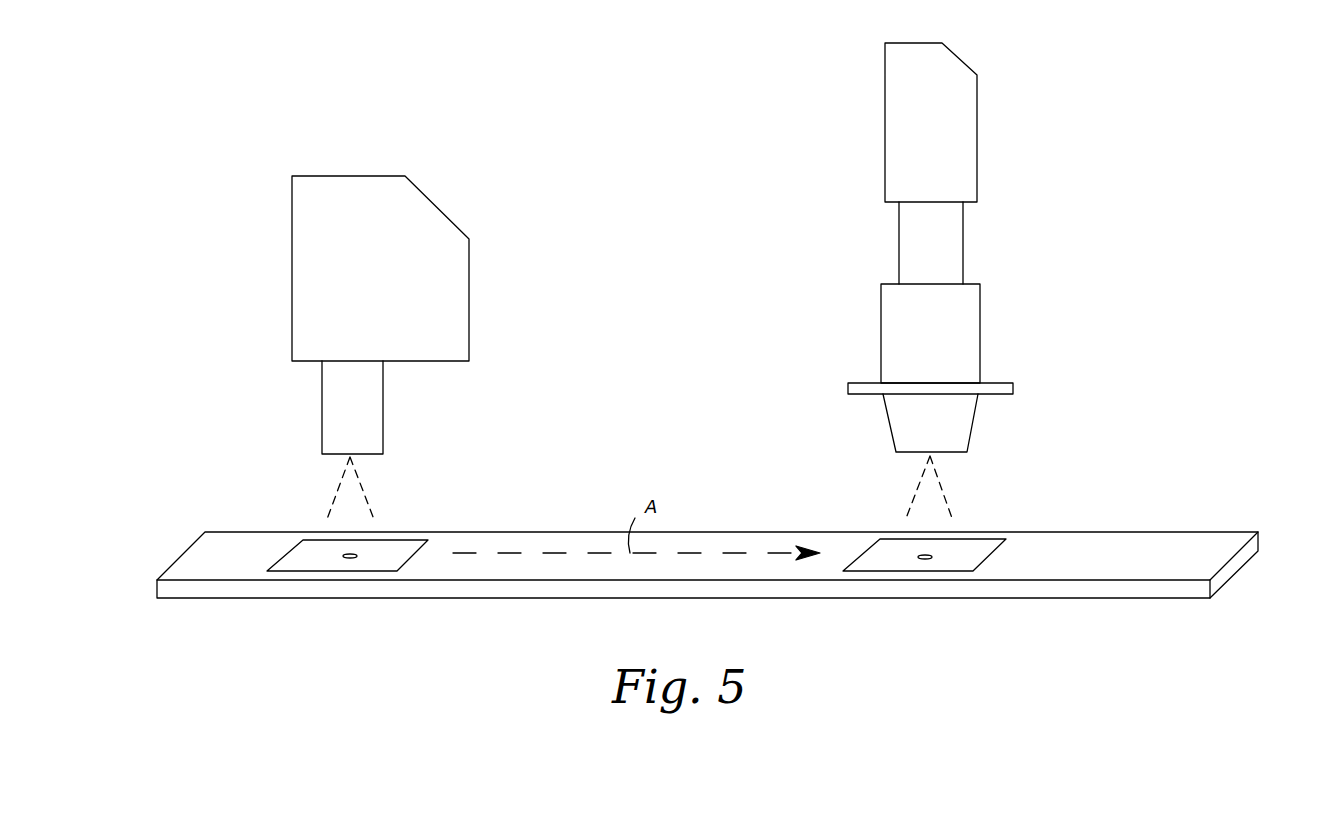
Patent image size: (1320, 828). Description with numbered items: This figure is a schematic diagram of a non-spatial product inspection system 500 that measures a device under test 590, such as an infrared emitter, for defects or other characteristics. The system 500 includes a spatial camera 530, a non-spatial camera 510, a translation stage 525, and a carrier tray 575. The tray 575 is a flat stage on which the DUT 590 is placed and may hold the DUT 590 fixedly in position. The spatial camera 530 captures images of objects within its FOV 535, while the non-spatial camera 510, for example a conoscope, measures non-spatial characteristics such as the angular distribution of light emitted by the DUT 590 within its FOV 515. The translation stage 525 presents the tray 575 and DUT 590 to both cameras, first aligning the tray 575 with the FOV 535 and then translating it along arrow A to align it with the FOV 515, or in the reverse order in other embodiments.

The non-spatial product inspection system 500 is at (1133, 100).
The non-spatial camera 510 is at (953, 75).
The field of view of the non-spatial camera 515 is at (943, 493).
The translation stage 525 is at (205, 537).
The spatial camera 530 is at (300, 185).
The field of view of the spatial camera 535 is at (365, 495).
The carrier tray 575 is at (303, 542).
The device under test 590 is at (353, 560).